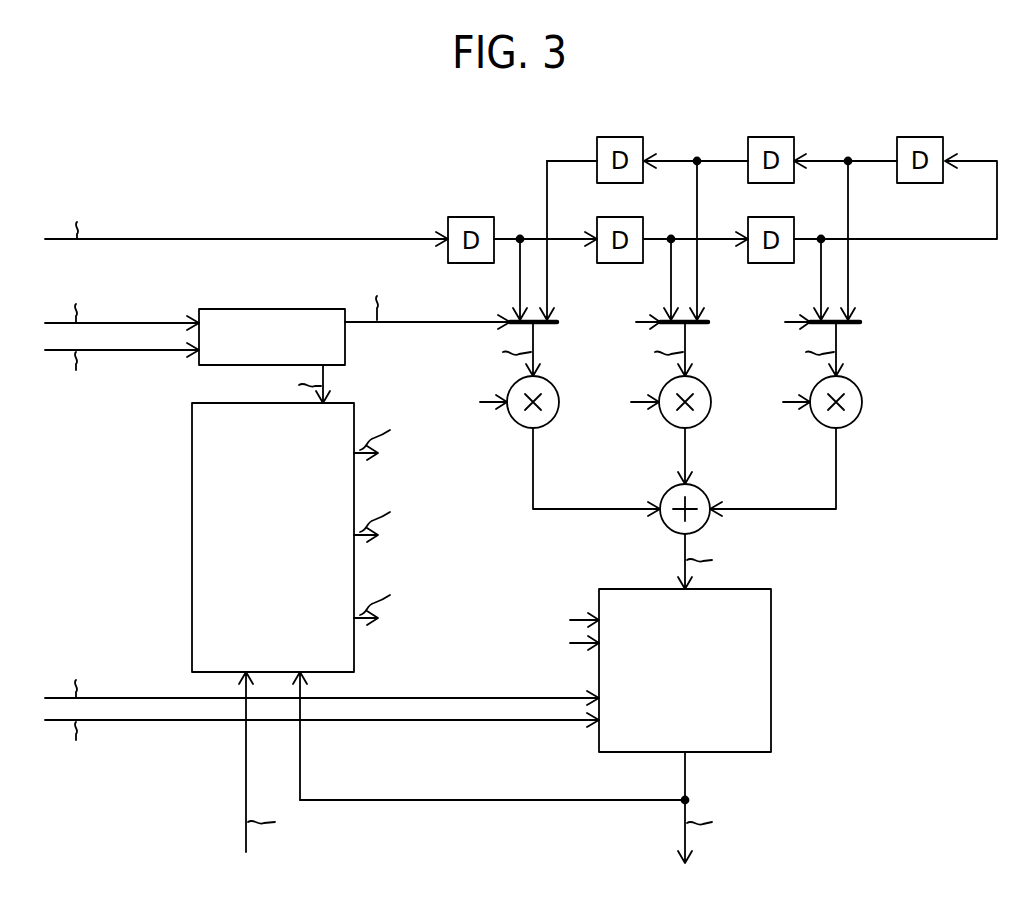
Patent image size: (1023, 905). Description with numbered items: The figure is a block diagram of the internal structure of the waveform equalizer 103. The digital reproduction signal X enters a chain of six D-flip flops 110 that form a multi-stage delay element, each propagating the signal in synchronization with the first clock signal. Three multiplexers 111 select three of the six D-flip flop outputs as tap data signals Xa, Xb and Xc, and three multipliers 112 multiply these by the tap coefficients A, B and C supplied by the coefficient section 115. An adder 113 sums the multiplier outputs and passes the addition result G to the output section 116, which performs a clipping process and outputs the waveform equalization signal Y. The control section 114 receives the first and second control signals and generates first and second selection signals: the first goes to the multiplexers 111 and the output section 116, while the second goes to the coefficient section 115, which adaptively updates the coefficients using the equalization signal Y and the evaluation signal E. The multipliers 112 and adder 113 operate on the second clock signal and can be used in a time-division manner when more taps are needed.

The waveform equalizer 103 is at (147, 147).
The D-flip flops 110 is at (468, 216).
The multiplexers 111 is at (862, 321).
The multipliers 112 is at (862, 400).
The adder 113 is at (703, 491).
The control section 114 is at (276, 309).
The coefficient section 115 is at (192, 483).
The output section 116 is at (771, 665).